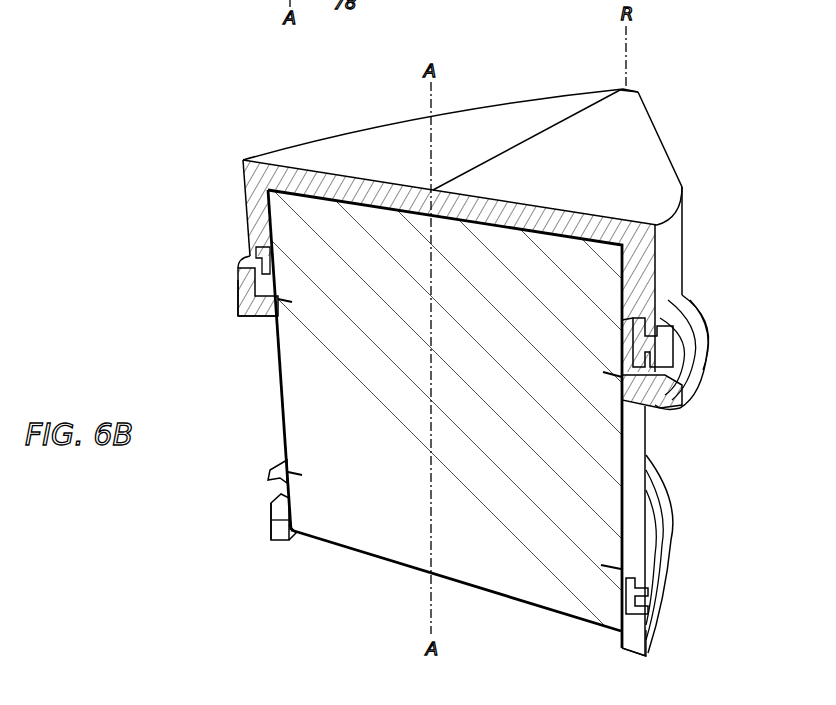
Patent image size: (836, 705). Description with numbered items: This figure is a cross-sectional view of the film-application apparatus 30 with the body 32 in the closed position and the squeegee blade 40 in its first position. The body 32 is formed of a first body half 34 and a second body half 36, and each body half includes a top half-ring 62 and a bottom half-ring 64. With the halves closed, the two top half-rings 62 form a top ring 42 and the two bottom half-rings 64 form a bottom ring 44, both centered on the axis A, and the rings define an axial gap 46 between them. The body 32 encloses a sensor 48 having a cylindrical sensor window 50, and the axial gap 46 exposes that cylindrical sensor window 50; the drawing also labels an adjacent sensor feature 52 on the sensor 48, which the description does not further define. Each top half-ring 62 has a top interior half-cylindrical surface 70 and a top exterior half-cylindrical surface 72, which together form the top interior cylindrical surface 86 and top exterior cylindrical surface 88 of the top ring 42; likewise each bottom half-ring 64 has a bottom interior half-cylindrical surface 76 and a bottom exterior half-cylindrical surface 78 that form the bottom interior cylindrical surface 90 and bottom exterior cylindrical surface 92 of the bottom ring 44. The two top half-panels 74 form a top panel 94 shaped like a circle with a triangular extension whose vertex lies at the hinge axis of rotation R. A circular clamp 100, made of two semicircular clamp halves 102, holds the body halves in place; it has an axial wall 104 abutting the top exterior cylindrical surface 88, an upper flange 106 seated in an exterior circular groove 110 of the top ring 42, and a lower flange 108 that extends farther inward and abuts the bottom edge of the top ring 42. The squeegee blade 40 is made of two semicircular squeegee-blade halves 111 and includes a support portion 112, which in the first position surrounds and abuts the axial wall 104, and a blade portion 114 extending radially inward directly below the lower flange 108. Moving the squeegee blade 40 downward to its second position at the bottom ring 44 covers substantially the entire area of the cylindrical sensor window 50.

The film-application apparatus 30 is at (752, 92).
The body 32 is at (403, 116).
The first body half 34 is at (283, 146).
The second body half 36 is at (670, 150).
The squeegee blade 40 is at (248, 313).
The top ring 42 is at (683, 222).
The bottom ring 44 is at (650, 648).
The axial gap 46 is at (660, 473).
The sensor 48 is at (355, 546).
The cylindrical sensor window 50 is at (632, 420).
The flange inner surface 52 is at (657, 465).
The top half-ring 62 is at (258, 226).
The bottom half-ring 64 is at (280, 537).
The top interior half-cylindrical surface 70 is at (278, 205).
The top exterior half-cylindrical surface 72 is at (242, 193).
The top half-panel 74 is at (622, 113).
The bottom interior half-cylindrical surface 76 is at (290, 500).
The bottom exterior half-cylindrical surface 78 is at (272, 525).
The top interior cylindrical surface 86 is at (628, 318).
The top exterior cylindrical surface 88 is at (242, 173).
The bottom interior cylindrical surface 90 is at (289, 492).
The bottom exterior cylindrical surface 92 is at (270, 511).
The top panel 94 is at (636, 135).
The circular clamp 100 is at (255, 265).
The semicircular clamp half 102 is at (257, 258).
The axial wall 104 is at (632, 376).
The upper flange 106 is at (640, 352).
The lower flange 108 is at (632, 393).
The exterior circular groove 110 is at (278, 278).
The semicircular squeegee-blade half 111 is at (238, 298).
The support portion 112 is at (688, 360).
The blade portion 114 is at (663, 420).